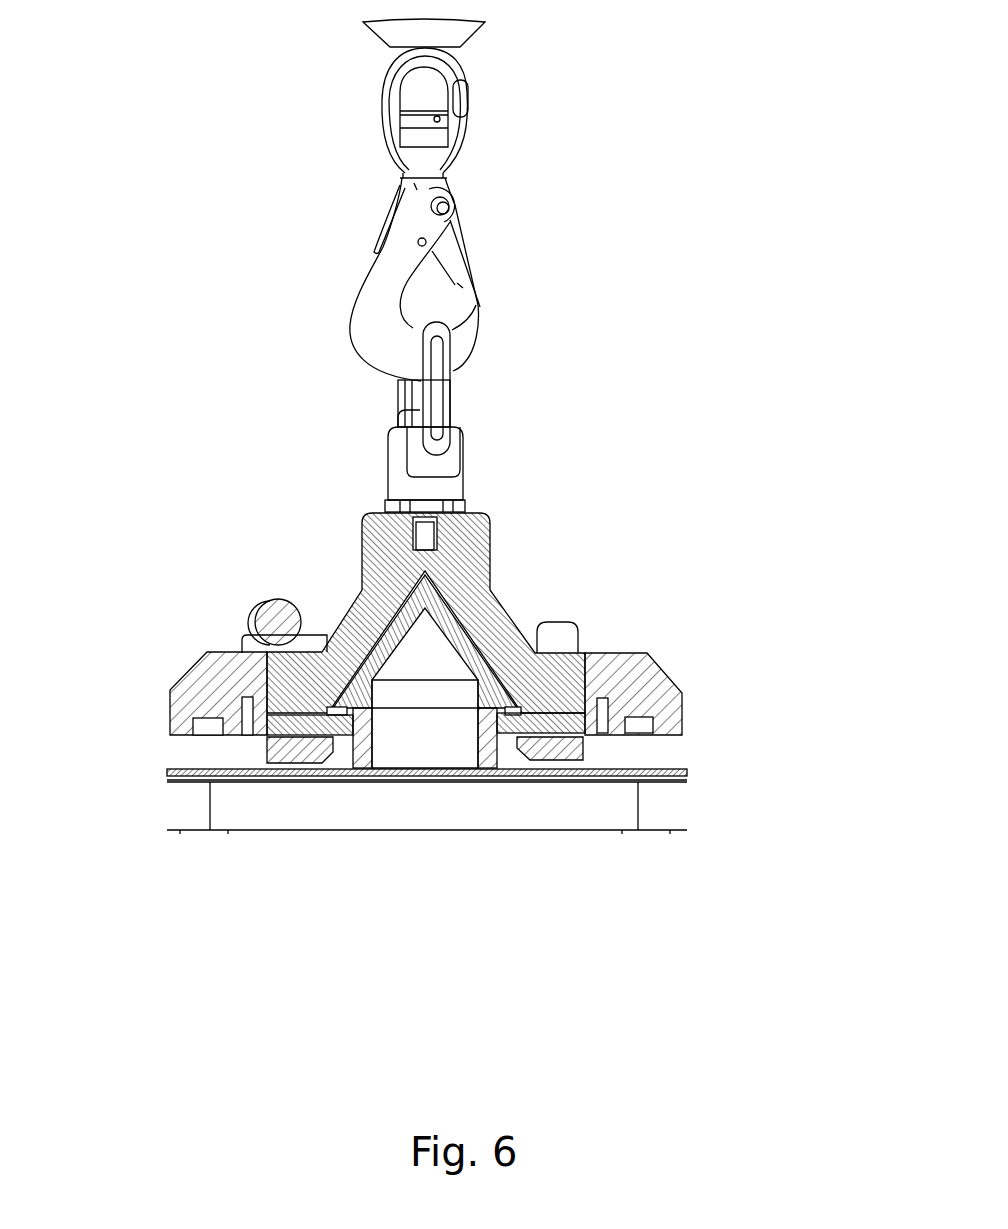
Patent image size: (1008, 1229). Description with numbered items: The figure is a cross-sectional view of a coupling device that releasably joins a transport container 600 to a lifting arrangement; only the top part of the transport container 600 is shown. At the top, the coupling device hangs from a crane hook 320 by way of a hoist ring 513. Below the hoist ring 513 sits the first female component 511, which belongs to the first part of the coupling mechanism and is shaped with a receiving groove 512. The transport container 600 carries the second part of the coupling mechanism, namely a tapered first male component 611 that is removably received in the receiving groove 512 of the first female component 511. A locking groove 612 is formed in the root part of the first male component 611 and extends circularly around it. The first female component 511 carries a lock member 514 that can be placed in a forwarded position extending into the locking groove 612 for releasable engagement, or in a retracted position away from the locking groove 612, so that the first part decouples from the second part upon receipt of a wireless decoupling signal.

The crane hook 320 is at (388, 357).
The hoist ring 513 is at (434, 488).
The first female component 511 is at (455, 580).
The receiving groove 512 is at (480, 637).
The first male component 611 is at (507, 698).
The lock member 514 is at (290, 727).
The locking groove 612 is at (336, 757).
The transport container 600 is at (562, 800).